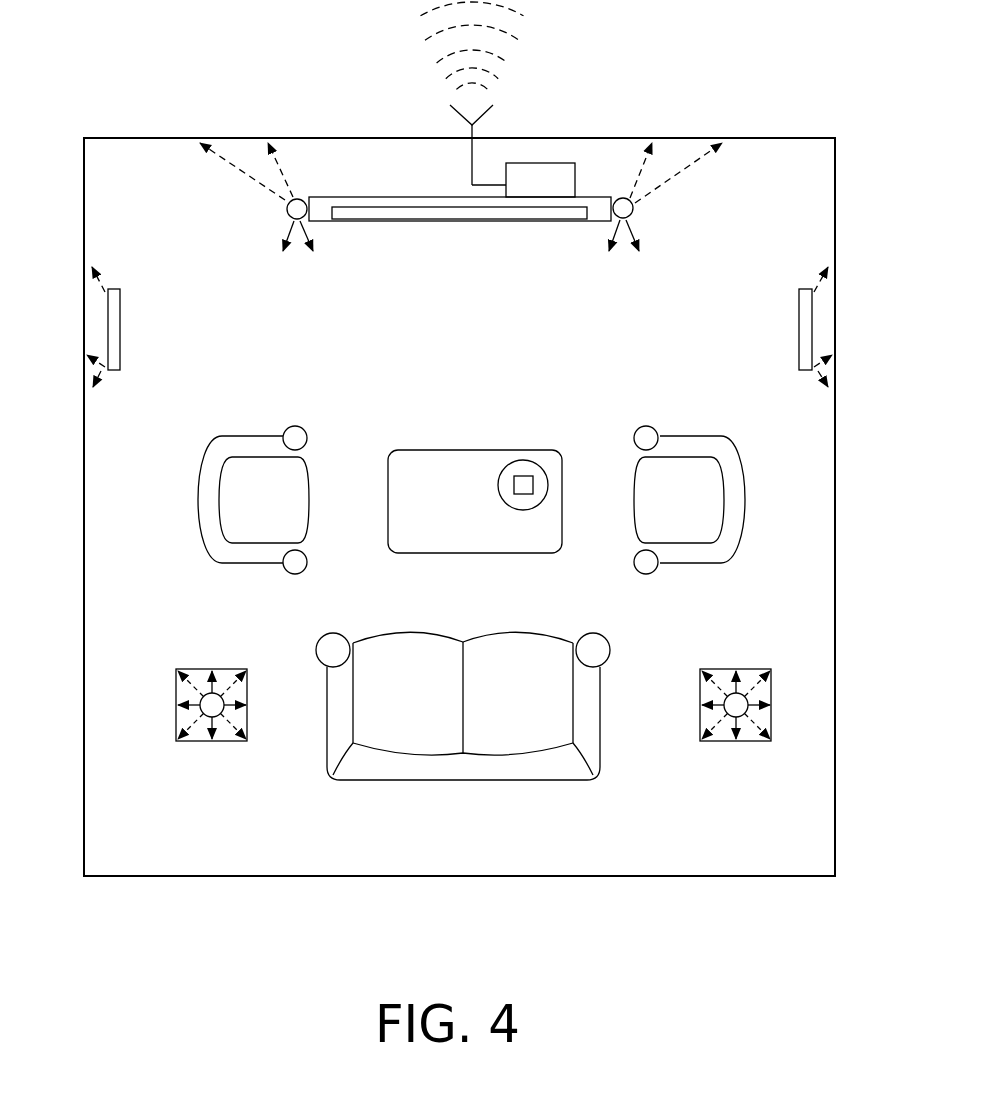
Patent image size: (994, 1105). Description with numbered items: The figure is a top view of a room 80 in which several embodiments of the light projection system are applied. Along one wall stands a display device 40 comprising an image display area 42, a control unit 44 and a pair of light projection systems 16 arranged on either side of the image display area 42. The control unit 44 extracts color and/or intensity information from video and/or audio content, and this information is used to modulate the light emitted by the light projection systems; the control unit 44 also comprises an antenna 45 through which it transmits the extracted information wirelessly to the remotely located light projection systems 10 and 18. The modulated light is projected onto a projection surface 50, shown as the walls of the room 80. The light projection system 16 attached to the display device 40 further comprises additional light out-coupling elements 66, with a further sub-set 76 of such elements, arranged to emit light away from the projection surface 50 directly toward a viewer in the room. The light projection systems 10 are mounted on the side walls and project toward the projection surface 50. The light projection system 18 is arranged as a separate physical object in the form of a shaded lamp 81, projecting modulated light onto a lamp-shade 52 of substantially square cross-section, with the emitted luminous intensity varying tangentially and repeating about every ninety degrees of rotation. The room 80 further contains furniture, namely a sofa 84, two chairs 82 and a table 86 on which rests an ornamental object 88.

The room 80 is at (208, 84).
The display device 40 is at (347, 198).
The image display area 42 is at (442, 216).
The control unit 44 is at (545, 172).
The antenna 45 is at (472, 167).
The light projection system 16 is at (287, 209).
The projection surface 50 is at (232, 144).
The additional light out-coupling elements 66 is at (292, 226).
The further sub-set 76 is at (303, 226).
The light projection system 10 is at (121, 328).
The chairs 82 is at (278, 514).
The table 86 is at (425, 464).
The ornamental object 88 is at (522, 465).
The sofa 84 is at (406, 650).
The shaded lamp 81 is at (184, 644).
The lamp-shade 52 is at (176, 691).
The light projection system 18 is at (216, 716).